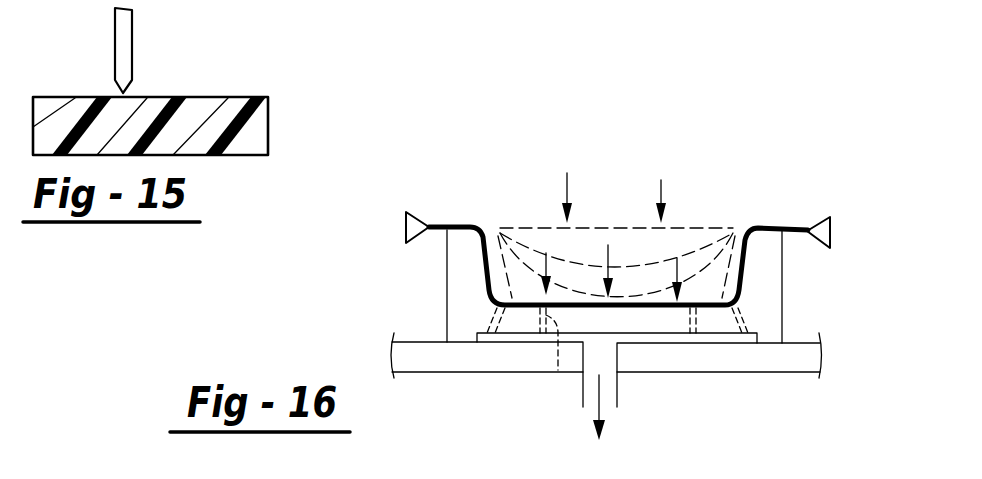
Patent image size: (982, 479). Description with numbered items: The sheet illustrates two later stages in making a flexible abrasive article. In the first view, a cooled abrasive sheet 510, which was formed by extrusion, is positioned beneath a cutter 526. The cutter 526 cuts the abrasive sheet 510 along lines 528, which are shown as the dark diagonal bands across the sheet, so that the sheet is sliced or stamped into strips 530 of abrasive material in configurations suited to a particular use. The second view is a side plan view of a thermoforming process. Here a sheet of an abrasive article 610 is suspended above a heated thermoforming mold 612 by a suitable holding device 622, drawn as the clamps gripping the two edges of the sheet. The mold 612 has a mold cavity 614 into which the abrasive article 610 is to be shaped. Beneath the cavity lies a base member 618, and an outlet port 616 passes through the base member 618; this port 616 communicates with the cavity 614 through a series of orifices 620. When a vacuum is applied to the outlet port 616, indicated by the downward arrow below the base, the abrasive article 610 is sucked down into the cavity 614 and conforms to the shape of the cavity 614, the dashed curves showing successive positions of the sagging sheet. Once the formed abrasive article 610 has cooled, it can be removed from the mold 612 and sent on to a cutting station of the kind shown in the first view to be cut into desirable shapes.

In FIG. 15, the cutter 526 is at (123, 45).
In FIG. 15, the abrasive sheet 510 is at (249, 97).
In FIG. 15, the lines 528 is at (218, 157).
In FIG. 15, the strips 530 is at (262, 156).
In FIG. 16, the abrasive article 610 is at (487, 255).
In FIG. 16, the thermoforming mold 612 is at (460, 275).
In FIG. 16, the mold cavity 614 is at (740, 297).
In FIG. 16, the outlet port 616 is at (630, 388).
In FIG. 16, the base member 618 is at (480, 358).
In FIG. 16, the orifices 620 is at (617, 357).
In FIG. 16, the holding device 622 is at (412, 211).